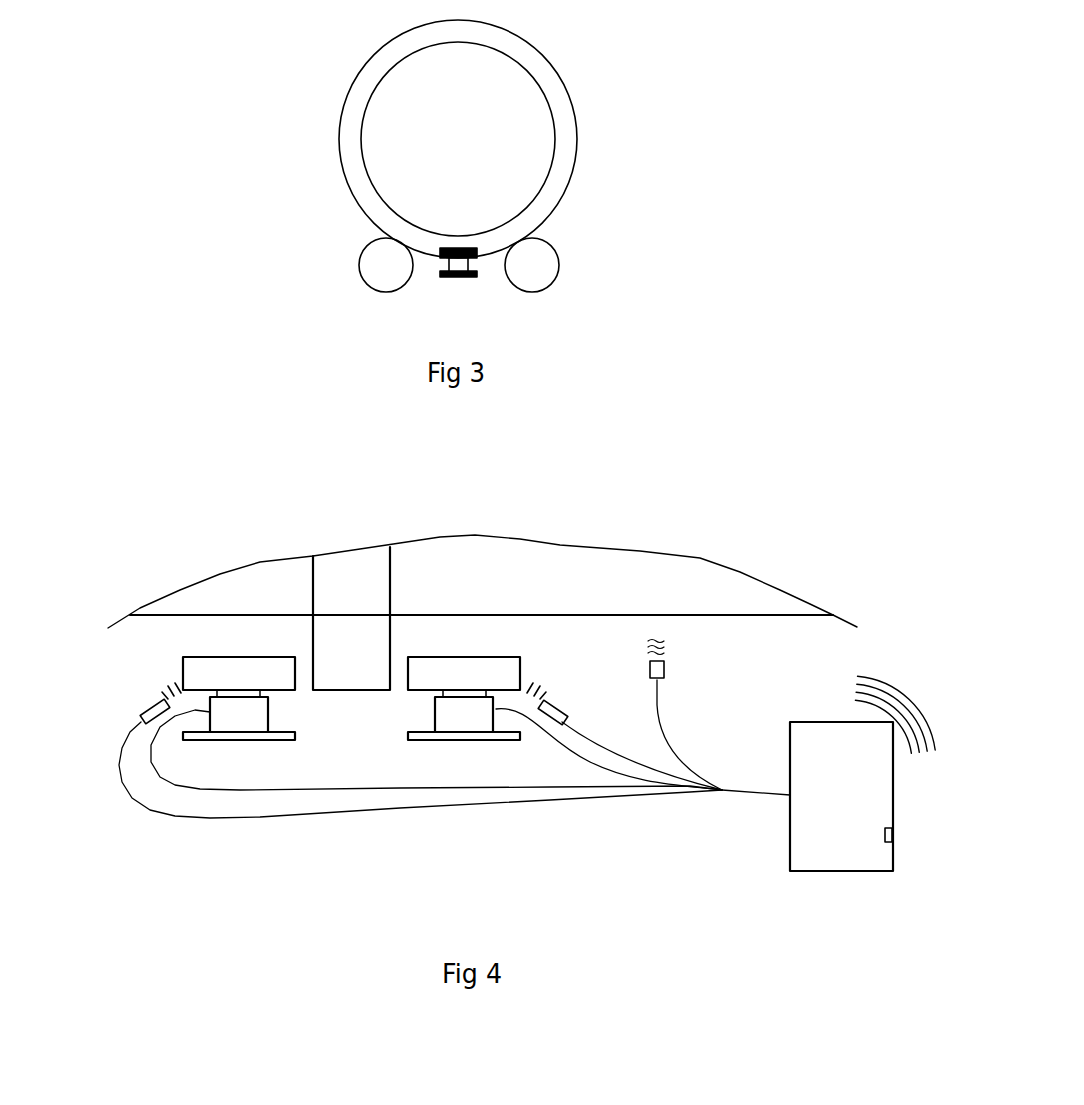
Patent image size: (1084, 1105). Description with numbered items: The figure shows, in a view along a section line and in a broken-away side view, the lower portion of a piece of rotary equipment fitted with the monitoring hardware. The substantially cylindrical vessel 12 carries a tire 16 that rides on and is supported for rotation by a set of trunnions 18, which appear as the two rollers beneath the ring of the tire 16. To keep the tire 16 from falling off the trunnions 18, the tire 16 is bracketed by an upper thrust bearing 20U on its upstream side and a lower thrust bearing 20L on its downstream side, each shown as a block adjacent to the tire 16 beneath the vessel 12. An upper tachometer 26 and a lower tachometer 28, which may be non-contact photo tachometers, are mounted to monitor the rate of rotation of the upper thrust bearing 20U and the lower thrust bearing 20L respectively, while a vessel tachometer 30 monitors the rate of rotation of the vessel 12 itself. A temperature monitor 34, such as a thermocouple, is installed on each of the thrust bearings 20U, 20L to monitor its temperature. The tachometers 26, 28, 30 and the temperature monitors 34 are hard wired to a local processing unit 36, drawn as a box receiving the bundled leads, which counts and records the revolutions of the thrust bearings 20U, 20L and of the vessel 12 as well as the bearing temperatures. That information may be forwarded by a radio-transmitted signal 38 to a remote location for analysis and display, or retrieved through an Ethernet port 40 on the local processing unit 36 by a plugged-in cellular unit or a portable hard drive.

In FIG. 3, the vessel 12 is at (566, 90).
In FIG. 4, the vessel 12 is at (655, 575).
In FIG. 4, the tire 16 is at (367, 575).
In FIG. 3, the trunnion 18 is at (361, 269).
In FIG. 3, the upper thrust bearing 20U is at (477, 250).
In FIG. 4, the upper thrust bearing 20U is at (468, 663).
In FIG. 4, the lower thrust bearing 20L is at (244, 665).
In FIG. 4, the upper tachometer 26 is at (567, 710).
In FIG. 4, the lower tachometer 28 is at (145, 705).
In FIG. 4, the vessel tachometer 30 is at (665, 673).
In FIG. 4, the temperature monitor 34 is at (208, 711).
In FIG. 4, the local processing unit 36 is at (812, 871).
In FIG. 4, the radio-transmitted signal 38 is at (918, 695).
In FIG. 4, the Ethernet port 40 is at (893, 835).